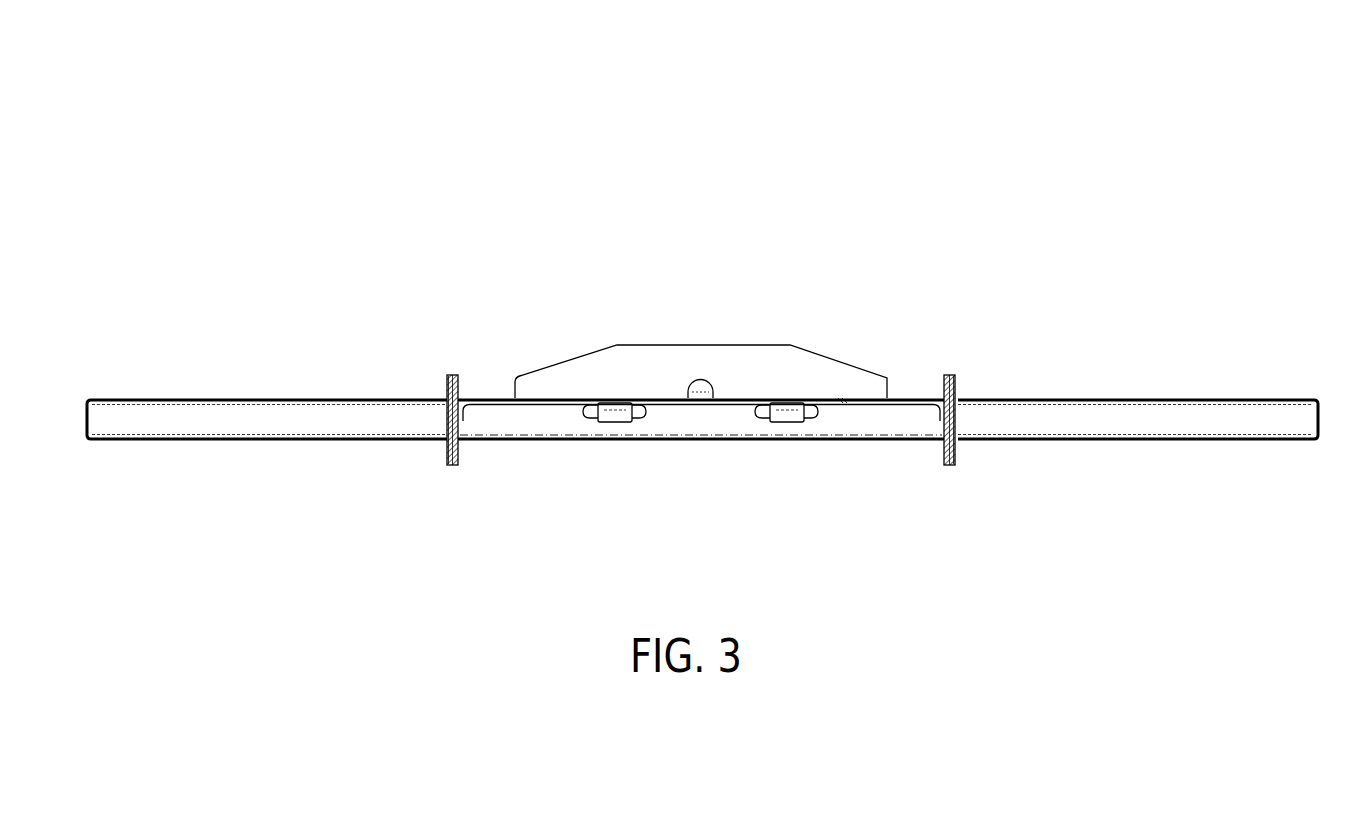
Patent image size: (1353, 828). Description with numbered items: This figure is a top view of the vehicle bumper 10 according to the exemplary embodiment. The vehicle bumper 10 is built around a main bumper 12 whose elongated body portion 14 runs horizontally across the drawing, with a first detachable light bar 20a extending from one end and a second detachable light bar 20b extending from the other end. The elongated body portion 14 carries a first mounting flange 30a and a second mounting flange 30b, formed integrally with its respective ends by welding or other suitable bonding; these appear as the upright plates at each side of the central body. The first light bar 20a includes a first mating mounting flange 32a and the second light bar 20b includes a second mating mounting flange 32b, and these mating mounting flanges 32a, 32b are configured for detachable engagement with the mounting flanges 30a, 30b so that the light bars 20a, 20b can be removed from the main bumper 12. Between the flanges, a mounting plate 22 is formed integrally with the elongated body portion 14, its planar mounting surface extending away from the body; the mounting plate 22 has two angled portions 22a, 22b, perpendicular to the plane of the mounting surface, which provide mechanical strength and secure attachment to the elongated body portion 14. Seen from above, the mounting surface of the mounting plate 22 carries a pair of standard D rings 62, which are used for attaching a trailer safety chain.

The vehicle bumper 10 is at (1022, 124).
The main bumper 12 is at (530, 560).
The elongated body portion 14 is at (677, 436).
The first detachable light bar 20a is at (233, 398).
The second detachable light bar 20b is at (1143, 405).
The mounting plate 22 is at (895, 395).
The first angled portion 22a is at (464, 424).
The second angled portion 22b is at (938, 423).
The first mounting flange 30a is at (454, 377).
The second mounting flange 30b is at (947, 385).
The first mating mounting flange 32a is at (448, 388).
The second mating mounting flange 32b is at (953, 383).
The D rings 62 is at (615, 422).